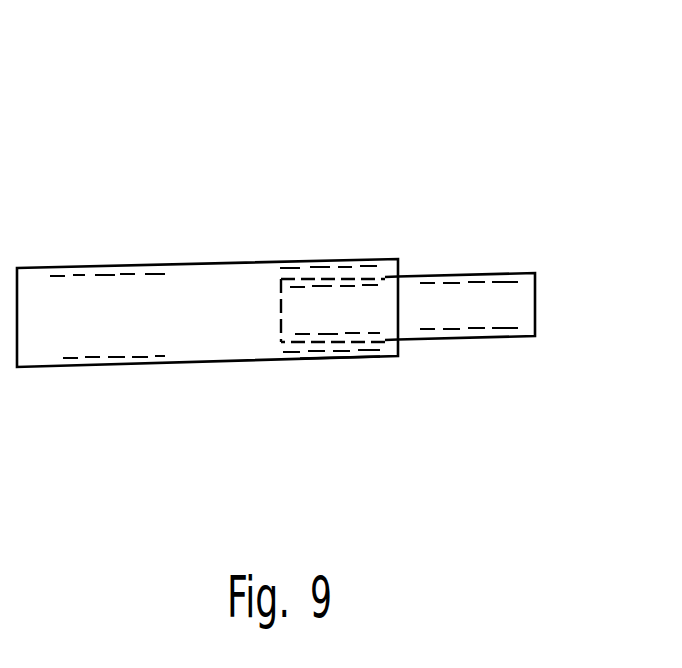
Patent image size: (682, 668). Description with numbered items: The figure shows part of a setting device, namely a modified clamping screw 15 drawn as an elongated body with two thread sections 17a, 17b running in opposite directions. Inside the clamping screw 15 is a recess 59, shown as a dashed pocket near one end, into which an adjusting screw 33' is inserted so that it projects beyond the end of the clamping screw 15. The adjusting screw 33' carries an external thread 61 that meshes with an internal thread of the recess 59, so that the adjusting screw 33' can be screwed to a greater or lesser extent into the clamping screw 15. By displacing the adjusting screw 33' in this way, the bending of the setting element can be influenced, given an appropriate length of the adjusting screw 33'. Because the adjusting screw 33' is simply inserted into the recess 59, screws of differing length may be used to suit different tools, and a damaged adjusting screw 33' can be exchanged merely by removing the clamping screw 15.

The clamping screw 15 is at (104, 255).
The thread section 17a is at (112, 358).
The thread section 17b is at (337, 359).
The recess 59 is at (280, 303).
The adjusting screw 33' is at (486, 229).
The external thread 61 is at (372, 328).